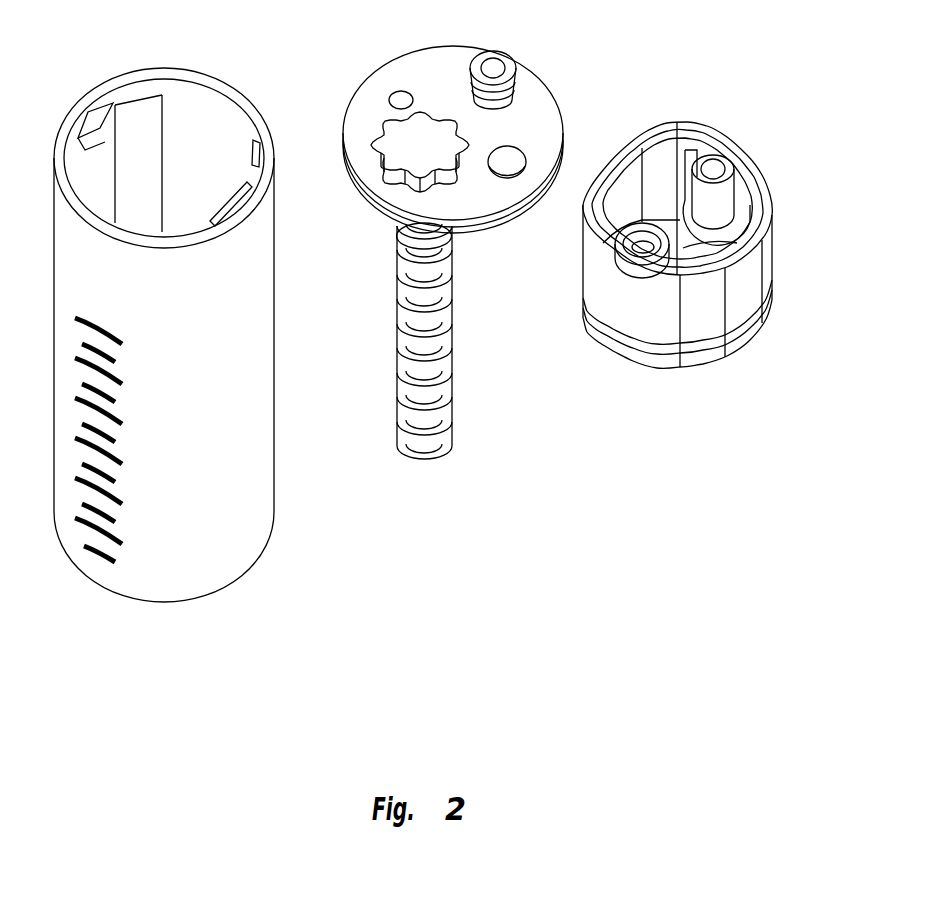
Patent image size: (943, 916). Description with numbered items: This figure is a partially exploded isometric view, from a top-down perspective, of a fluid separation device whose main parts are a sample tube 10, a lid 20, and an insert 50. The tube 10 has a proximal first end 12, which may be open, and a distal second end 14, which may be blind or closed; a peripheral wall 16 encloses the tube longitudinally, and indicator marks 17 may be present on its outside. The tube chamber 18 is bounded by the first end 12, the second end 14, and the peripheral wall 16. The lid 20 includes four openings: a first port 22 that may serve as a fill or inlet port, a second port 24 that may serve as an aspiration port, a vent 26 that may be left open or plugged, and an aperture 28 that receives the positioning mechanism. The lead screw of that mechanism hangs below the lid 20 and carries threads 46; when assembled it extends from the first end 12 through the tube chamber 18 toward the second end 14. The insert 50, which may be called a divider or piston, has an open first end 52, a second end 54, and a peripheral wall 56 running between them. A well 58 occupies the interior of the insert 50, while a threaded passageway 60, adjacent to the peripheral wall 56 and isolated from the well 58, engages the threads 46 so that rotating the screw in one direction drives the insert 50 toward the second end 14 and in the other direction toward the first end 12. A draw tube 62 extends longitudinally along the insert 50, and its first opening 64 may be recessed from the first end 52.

The tube 10 is at (244, 633).
The first end 12 is at (180, 72).
The second end 14 is at (140, 601).
The peripheral wall 16 is at (253, 396).
The indicator marks 17 is at (76, 357).
The tube chamber 18 is at (198, 152).
The lid 20 is at (538, 105).
The first port 22 is at (493, 68).
The second port 24 is at (507, 168).
The vent 26 is at (398, 95).
The aperture 28 is at (448, 192).
The threads 46 is at (422, 407).
The insert 50 is at (692, 403).
The first end 52 is at (680, 120).
The second end 54 is at (645, 358).
The peripheral wall 56 is at (770, 243).
The well 58 is at (693, 253).
The passageway 60 is at (640, 251).
The draw tube 62 is at (720, 172).
The first opening 64 is at (706, 162).